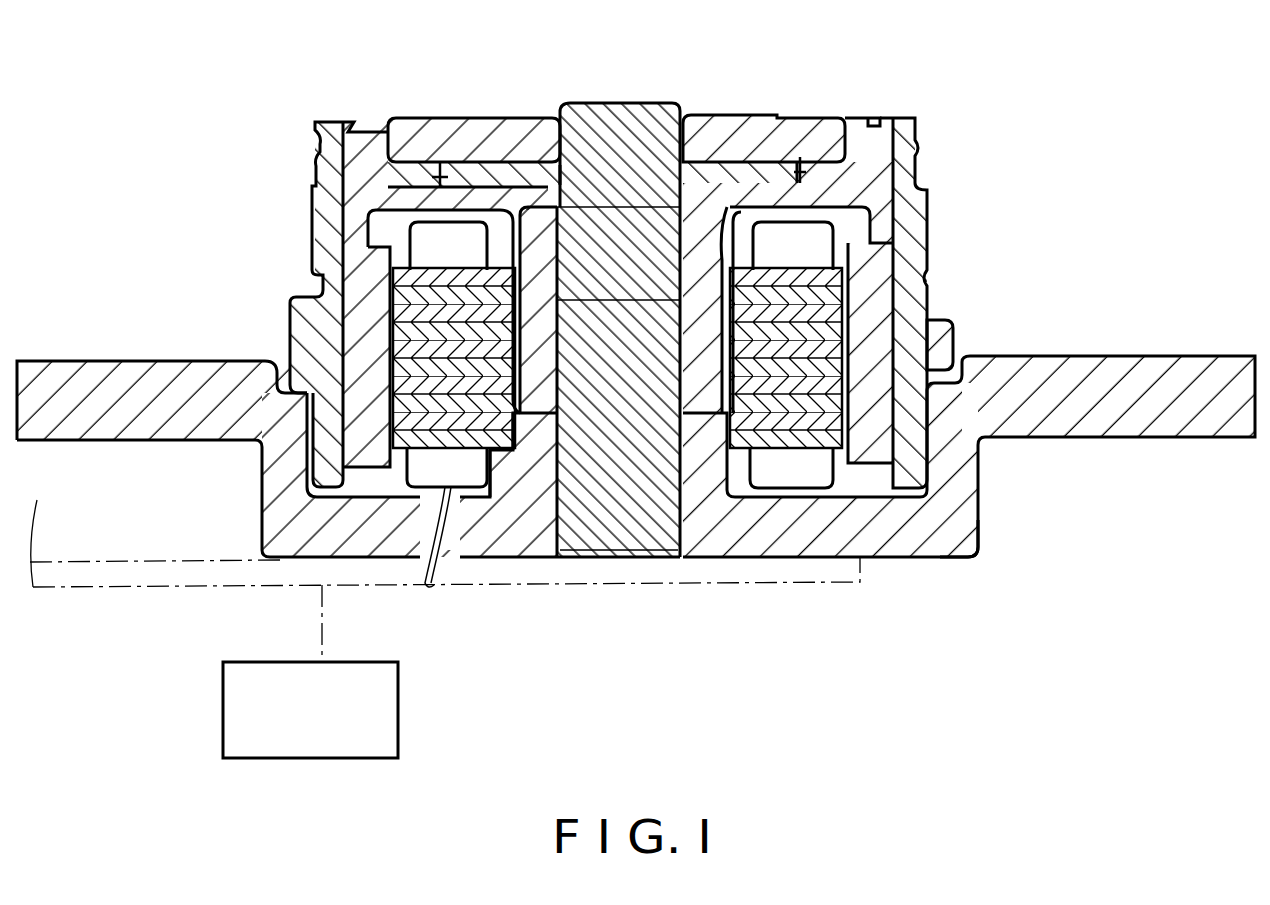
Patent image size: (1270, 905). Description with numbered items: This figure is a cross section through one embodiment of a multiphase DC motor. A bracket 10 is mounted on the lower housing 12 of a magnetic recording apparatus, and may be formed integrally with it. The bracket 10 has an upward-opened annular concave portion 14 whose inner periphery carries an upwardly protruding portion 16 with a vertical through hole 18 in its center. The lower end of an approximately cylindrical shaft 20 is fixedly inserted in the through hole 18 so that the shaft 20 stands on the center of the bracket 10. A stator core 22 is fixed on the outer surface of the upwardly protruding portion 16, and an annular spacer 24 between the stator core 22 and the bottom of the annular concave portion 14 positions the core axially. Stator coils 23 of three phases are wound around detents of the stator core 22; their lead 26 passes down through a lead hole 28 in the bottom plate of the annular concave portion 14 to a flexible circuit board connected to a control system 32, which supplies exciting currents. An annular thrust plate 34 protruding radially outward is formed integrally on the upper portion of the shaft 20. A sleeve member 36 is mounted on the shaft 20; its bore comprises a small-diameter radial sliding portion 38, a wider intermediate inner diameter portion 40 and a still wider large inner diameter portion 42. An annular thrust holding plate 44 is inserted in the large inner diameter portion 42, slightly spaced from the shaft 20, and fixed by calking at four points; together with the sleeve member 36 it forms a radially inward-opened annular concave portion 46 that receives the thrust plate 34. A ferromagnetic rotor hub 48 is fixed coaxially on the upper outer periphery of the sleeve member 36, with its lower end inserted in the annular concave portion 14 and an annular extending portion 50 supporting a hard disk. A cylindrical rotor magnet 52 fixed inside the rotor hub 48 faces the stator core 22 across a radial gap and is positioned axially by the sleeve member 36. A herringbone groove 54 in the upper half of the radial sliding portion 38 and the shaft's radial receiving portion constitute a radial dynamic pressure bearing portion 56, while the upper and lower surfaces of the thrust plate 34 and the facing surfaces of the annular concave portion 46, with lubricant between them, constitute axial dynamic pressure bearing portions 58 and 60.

The bracket 10 is at (1068, 370).
The lower housing 12 is at (214, 587).
The annular concave portion 14 is at (880, 467).
The upwardly protruding portion 16 is at (690, 450).
The through hole 18 is at (562, 545).
The shaft 20 is at (650, 100).
The stator core 22 is at (797, 427).
The stator coil 23 is at (773, 477).
The annular spacer 24 is at (510, 468).
The lead 26 is at (457, 550).
The lead hole 28 is at (417, 563).
The control system 32 is at (398, 718).
The thrust plate 34 is at (797, 130).
The sleeve member 36 is at (386, 117).
The radial sliding portion 38 is at (563, 318).
The intermediate inner diameter portion 40 is at (482, 118).
The large inner diameter portion 42 is at (438, 162).
The thrust holding plate 44 is at (532, 118).
The annular concave portion 46 is at (802, 167).
The rotor hub 48 is at (912, 233).
The annular extending portion 50 is at (951, 330).
The rotor magnet 52 is at (878, 455).
The herringbone groove 54 is at (600, 218).
The radial dynamic pressure bearing portion 56 is at (700, 250).
The axial dynamic pressure bearing portion 58 is at (760, 137).
The axial dynamic pressure bearing portion 60 is at (779, 153).